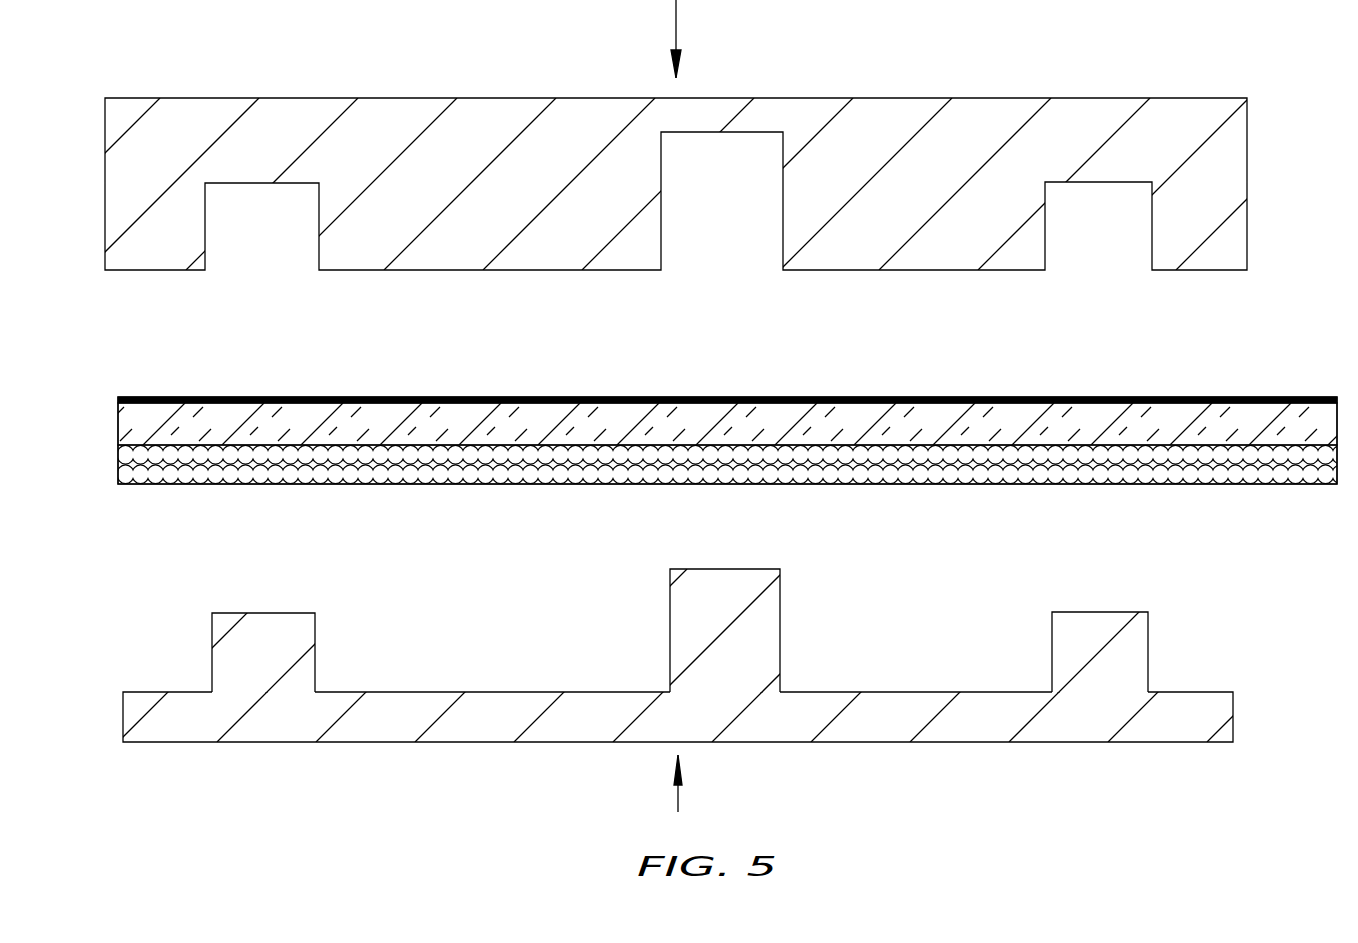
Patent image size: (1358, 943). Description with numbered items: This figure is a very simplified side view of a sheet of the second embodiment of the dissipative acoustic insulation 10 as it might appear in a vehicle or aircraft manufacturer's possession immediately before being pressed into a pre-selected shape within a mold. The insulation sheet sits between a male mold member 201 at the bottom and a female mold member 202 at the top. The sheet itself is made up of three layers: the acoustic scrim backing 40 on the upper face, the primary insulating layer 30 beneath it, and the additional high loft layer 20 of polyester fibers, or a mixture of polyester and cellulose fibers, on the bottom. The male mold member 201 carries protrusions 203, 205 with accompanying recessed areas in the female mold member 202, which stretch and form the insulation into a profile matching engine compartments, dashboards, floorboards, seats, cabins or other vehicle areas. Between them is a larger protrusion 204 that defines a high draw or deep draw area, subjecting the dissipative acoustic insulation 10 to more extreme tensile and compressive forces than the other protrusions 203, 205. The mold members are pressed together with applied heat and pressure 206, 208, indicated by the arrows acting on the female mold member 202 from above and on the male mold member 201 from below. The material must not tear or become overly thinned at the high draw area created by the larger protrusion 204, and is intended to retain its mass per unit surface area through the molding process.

The dissipative acoustic insulation 10 is at (694, 426).
The high loft layer 20 is at (128, 463).
The primary insulating layer 30 is at (130, 427).
The acoustic scrim backing 40 is at (162, 398).
The male mold member 201 is at (397, 732).
The female mold member 202 is at (962, 106).
The protrusion 203 is at (290, 623).
The larger protrusion 204 is at (727, 578).
The protrusion 205 is at (1108, 622).
The applied pressure 206 is at (673, 22).
The applied pressure 208 is at (680, 798).